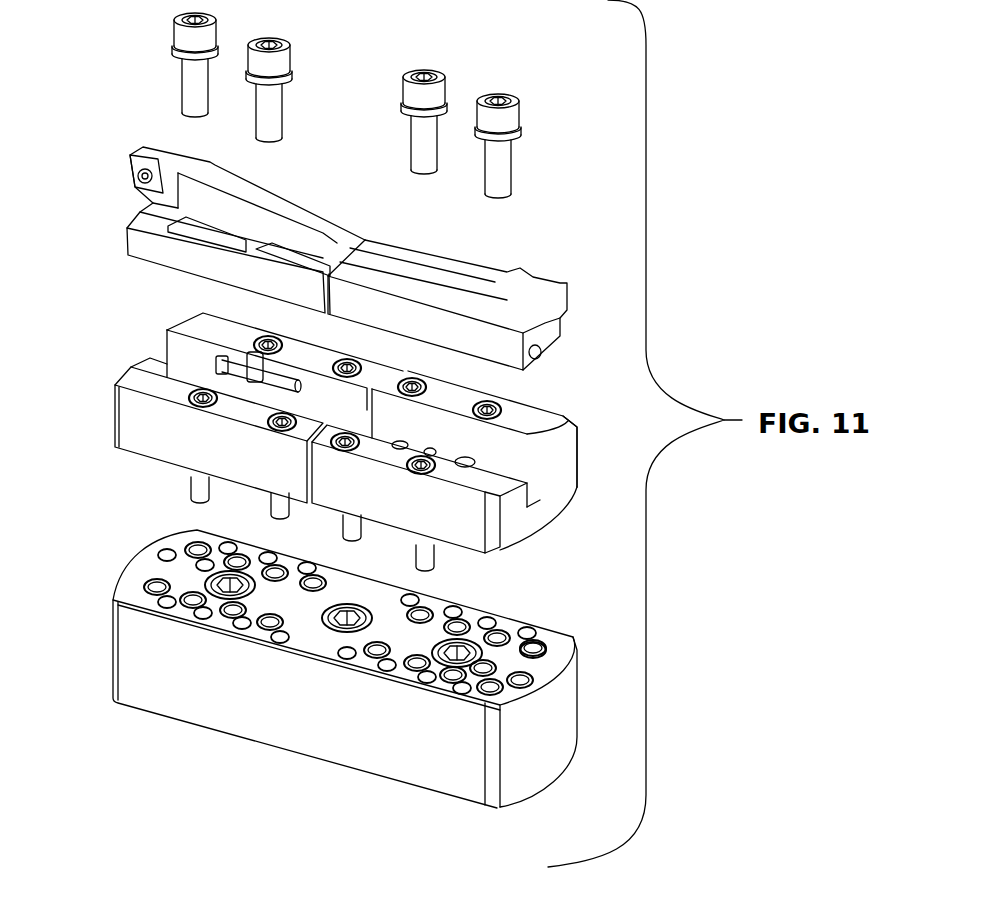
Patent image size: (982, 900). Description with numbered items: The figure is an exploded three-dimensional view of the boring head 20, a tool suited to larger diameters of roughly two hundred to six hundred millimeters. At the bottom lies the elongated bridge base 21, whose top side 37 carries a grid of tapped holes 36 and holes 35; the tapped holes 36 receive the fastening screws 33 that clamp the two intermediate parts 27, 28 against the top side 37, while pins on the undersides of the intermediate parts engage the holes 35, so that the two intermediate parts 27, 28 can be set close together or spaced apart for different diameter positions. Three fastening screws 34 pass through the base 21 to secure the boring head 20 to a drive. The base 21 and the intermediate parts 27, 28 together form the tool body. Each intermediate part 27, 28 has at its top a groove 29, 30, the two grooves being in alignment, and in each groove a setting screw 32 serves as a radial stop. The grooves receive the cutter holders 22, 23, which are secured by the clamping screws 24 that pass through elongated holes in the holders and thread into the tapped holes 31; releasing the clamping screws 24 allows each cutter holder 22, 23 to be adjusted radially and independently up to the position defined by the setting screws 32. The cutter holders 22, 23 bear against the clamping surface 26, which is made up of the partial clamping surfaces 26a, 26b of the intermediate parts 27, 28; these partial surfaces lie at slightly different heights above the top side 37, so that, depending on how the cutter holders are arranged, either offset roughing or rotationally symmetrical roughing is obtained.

The boring head 20 is at (72, 320).
The bridge base 21 is at (336, 679).
The cutter holder 22 is at (525, 272).
The cutter holder 23 is at (277, 197).
The clamping screw 24 is at (195, 42).
The clamping surface 26 is at (345, 430).
The partial clamping surface 26a is at (530, 478).
The partial clamping surface 26b is at (183, 380).
The intermediate part 27 is at (513, 515).
The intermediate part 28 is at (128, 433).
The groove 29 is at (547, 455).
The groove 30 is at (160, 370).
The tapped hole 31 is at (527, 488).
The setting screw 32 is at (297, 382).
The fastening screw 33 is at (205, 483).
The fastening screw 34 is at (205, 585).
The hole 35 is at (172, 545).
The tapped hole 36 is at (229, 545).
The top side 37 is at (525, 660).